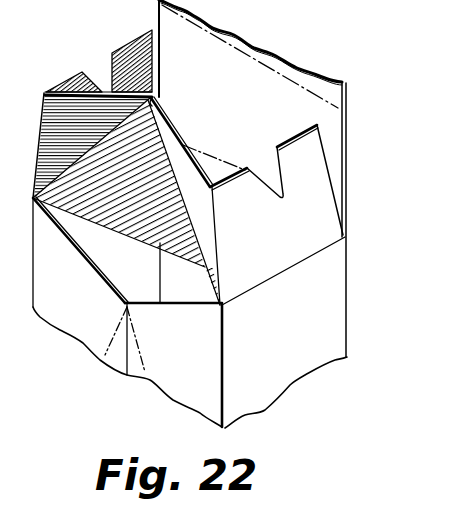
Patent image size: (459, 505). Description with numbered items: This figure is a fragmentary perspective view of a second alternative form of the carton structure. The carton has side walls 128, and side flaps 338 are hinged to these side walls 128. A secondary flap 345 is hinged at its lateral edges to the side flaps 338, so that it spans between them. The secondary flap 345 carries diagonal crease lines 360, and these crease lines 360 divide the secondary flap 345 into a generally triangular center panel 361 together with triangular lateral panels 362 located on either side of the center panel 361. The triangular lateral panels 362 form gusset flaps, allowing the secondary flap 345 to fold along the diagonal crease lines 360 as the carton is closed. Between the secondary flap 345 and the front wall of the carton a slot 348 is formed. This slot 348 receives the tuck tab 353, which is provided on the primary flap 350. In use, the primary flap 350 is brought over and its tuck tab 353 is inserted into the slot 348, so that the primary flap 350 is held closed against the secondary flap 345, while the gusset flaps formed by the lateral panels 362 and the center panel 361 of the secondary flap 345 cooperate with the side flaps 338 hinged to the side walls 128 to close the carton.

The side wall 128 is at (333, 315).
The side flap 338 is at (283, 270).
The secondary flap 345 is at (183, 145).
The slot 348 is at (87, 238).
The primary flap 350 is at (337, 126).
The tuck tab 353 is at (320, 82).
The diagonal crease lines 360 is at (157, 130).
The center panel 361 is at (137, 200).
The triangular lateral panels 362 is at (60, 122).